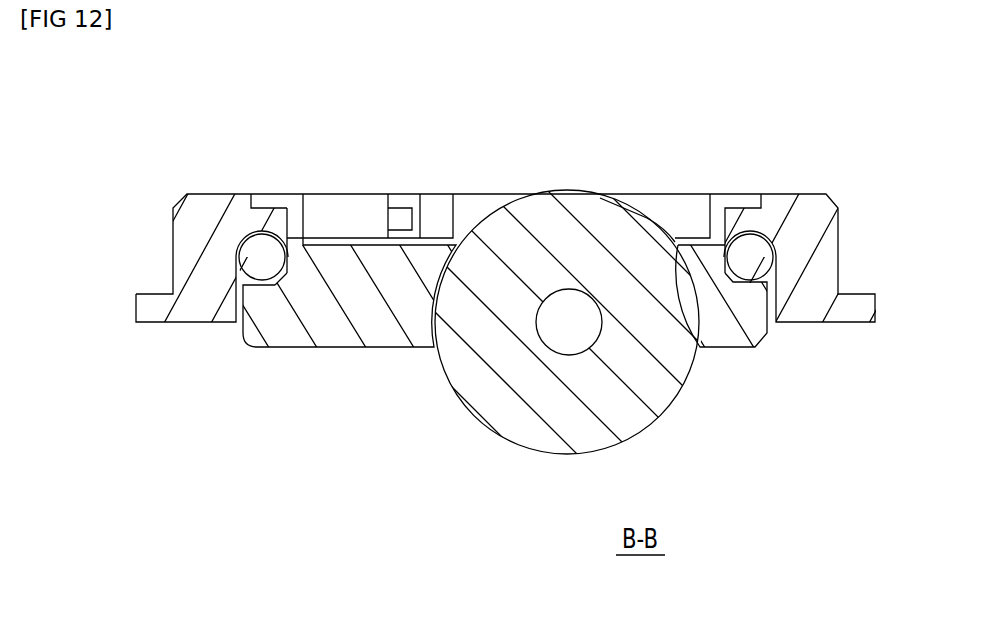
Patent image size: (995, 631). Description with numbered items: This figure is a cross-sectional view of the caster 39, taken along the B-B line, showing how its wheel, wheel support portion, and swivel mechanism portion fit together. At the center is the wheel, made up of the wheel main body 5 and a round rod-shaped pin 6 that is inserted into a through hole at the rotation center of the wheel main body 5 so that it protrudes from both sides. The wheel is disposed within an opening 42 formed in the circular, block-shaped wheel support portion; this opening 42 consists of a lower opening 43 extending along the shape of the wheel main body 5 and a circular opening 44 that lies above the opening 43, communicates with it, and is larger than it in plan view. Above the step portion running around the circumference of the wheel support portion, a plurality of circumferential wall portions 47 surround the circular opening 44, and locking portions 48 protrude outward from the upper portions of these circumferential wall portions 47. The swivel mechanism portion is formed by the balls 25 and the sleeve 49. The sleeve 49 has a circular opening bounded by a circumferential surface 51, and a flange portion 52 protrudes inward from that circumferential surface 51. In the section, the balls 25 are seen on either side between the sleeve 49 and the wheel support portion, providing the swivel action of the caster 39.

The caster 39 is at (766, 101).
The opening 42 is at (703, 129).
The opening 43 is at (645, 195).
The circular opening 44 is at (693, 195).
The circumferential wall portions 47 is at (365, 193).
The locking portions 48 is at (288, 193).
The sleeve 49 is at (815, 195).
The circumferential surface 51 is at (255, 337).
The flange portion 52 is at (318, 193).
The balls 25 is at (273, 278).
The wheel main body 5 is at (459, 399).
The pin 6 is at (594, 344).